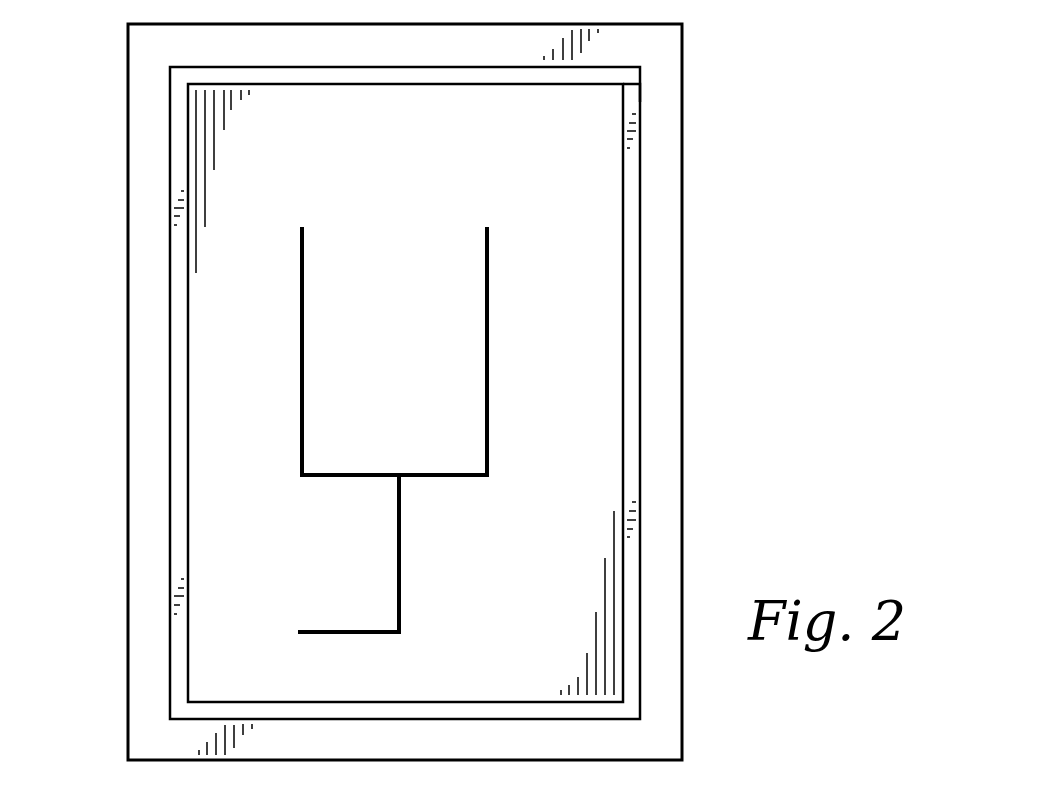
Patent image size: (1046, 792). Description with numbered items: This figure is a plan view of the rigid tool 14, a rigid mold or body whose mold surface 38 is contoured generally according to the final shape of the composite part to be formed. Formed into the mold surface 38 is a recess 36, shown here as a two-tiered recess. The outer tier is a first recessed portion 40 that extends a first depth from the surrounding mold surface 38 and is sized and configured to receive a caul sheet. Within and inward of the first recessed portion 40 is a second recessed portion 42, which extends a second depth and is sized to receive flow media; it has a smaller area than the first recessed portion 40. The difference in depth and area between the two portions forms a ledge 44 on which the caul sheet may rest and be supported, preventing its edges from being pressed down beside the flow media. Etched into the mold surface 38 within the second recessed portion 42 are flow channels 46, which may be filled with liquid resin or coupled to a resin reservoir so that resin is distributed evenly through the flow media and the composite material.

The rigid tool 14 is at (683, 364).
The recess 36 is at (645, 87).
The mold surface 38 is at (306, 57).
The first recessed portion 40 is at (168, 498).
The second recessed portion 42 is at (188, 305).
The ledge 44 is at (632, 196).
The flow channels 46 is at (489, 400).